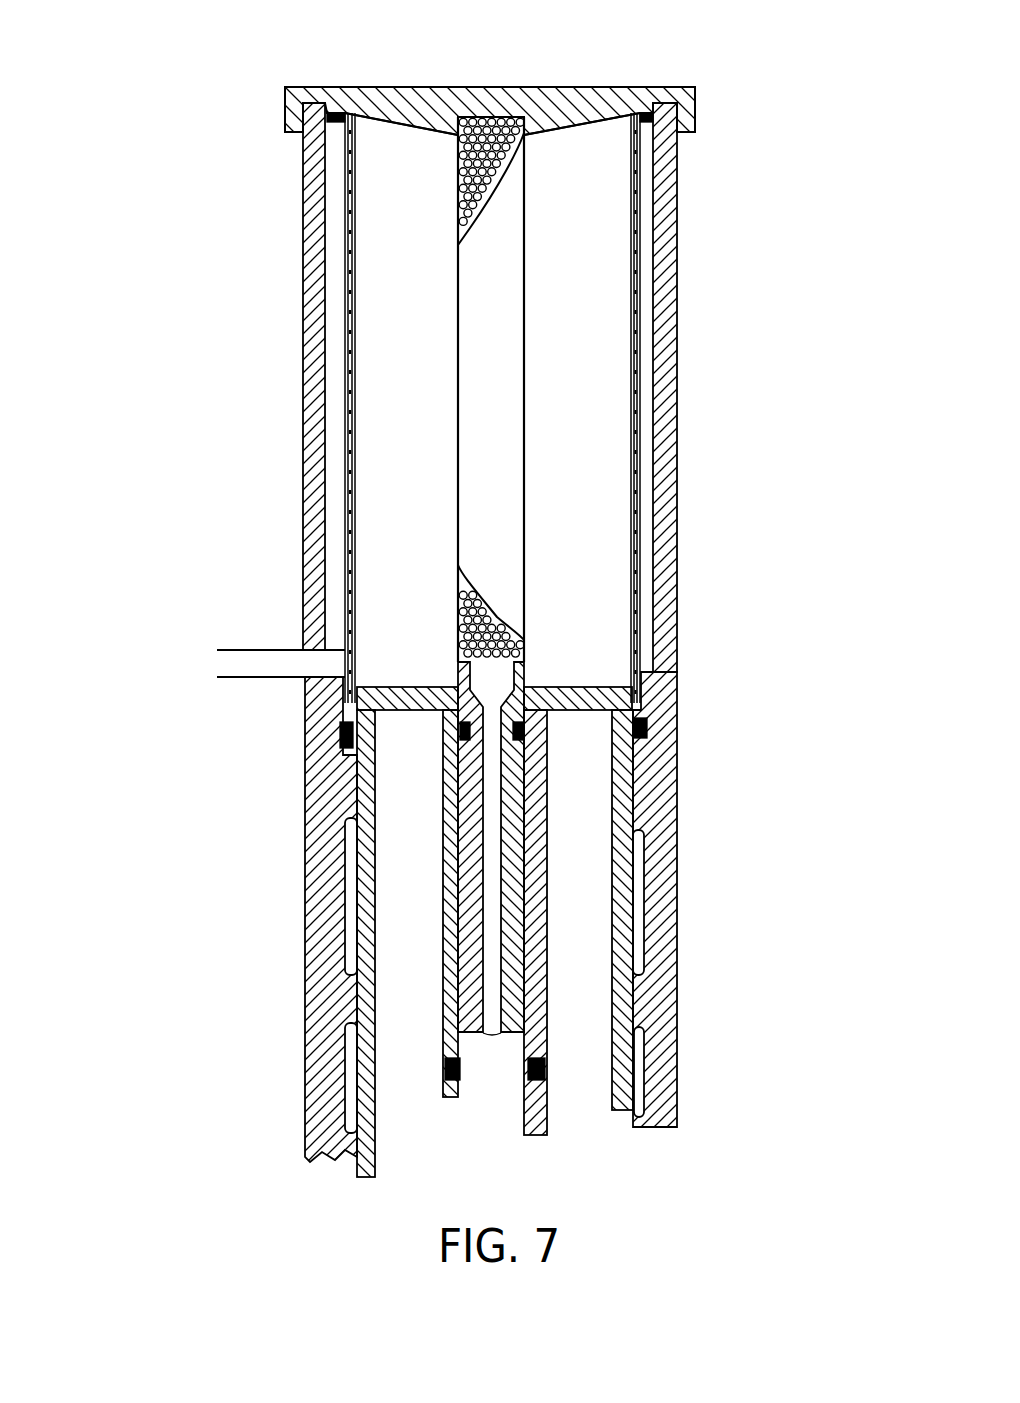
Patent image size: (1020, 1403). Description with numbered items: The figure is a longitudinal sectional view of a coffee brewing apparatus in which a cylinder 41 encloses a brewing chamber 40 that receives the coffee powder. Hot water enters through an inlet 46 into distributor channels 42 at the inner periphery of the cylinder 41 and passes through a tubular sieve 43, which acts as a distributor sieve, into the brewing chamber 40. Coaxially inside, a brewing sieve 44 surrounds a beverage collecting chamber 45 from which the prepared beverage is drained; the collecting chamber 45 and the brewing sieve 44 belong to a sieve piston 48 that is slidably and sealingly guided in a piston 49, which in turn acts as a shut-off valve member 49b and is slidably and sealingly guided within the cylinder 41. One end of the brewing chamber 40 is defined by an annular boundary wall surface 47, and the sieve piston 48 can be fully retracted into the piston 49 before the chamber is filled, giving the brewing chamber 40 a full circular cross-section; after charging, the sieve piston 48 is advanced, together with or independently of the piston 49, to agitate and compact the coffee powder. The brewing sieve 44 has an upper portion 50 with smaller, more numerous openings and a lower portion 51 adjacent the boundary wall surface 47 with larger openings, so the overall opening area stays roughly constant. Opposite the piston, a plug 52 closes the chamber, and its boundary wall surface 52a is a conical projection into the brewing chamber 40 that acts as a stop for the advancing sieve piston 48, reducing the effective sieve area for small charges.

The brewing chamber 40 is at (560, 212).
The cylinder 41 is at (680, 478).
The distributor channels 42 is at (645, 360).
The tubular sieve 43 is at (640, 243).
The brewing sieve 44 is at (495, 352).
The beverage collecting chamber 45 is at (342, 685).
The inlet 46 is at (232, 667).
The boundary wall surface 47 is at (577, 690).
The sieve piston 48 is at (478, 1003).
The piston 49 is at (645, 795).
The shut-off valve member 49b is at (660, 748).
The upper portion 50 is at (445, 178).
The lower portion 51 is at (445, 616).
The plug 52 is at (540, 103).
The boundary wall surface 52a is at (580, 113).